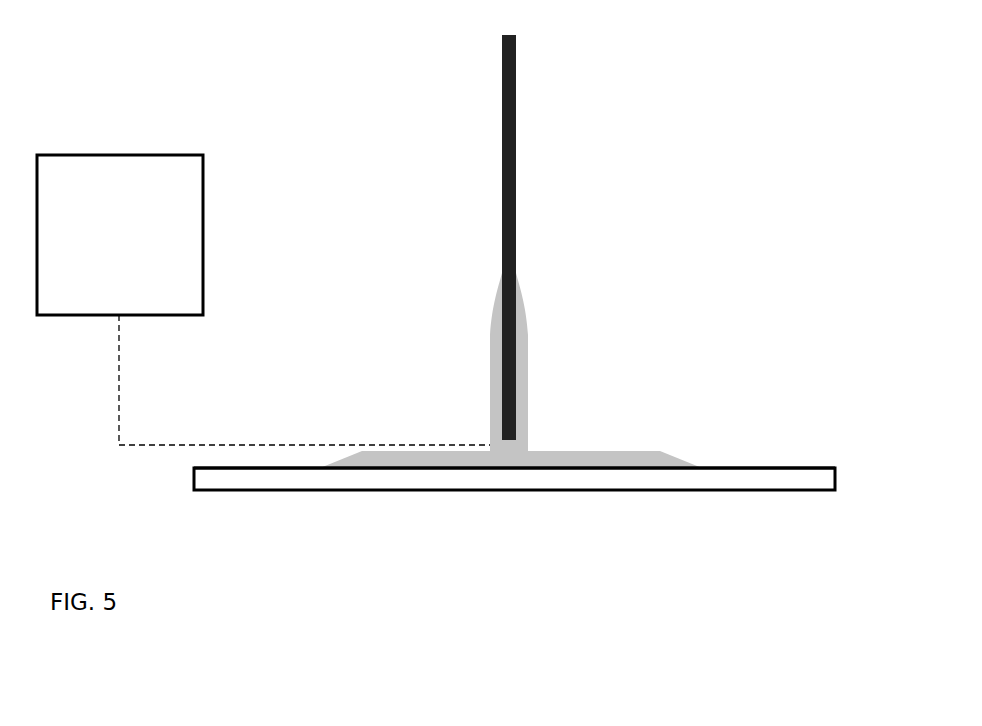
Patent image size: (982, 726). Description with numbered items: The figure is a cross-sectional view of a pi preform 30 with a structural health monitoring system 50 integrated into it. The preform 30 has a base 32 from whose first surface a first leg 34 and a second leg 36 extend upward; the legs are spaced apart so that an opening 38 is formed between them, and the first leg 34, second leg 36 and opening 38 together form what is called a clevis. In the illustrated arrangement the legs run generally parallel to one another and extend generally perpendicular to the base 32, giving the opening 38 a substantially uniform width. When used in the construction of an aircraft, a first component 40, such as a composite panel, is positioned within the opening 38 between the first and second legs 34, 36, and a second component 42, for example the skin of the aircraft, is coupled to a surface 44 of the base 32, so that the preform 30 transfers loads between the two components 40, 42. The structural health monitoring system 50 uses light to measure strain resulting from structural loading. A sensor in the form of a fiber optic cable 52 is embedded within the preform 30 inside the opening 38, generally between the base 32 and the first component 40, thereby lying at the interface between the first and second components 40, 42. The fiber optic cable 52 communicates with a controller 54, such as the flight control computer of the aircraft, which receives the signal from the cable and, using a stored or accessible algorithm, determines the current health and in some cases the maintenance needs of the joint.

The preform 30 is at (561, 336).
The base 32 is at (527, 470).
The first leg 34 is at (519, 351).
The second leg 36 is at (527, 407).
The opening 38 is at (512, 429).
The first component 40 is at (431, 241).
The second component 42 is at (514, 520).
The surface of the base 44 is at (543, 470).
The structural health monitoring system 50 is at (271, 284).
The fiber optic cable 52 is at (511, 445).
The controller 54 is at (120, 235).